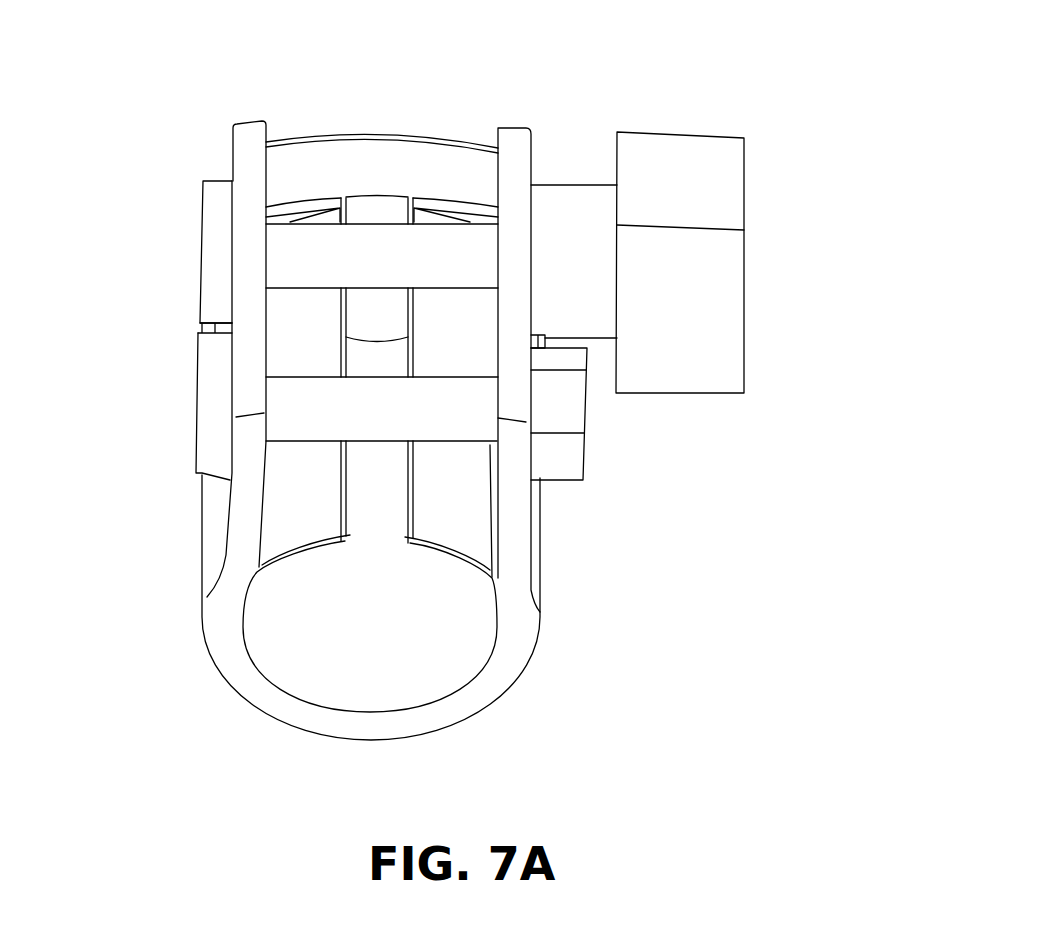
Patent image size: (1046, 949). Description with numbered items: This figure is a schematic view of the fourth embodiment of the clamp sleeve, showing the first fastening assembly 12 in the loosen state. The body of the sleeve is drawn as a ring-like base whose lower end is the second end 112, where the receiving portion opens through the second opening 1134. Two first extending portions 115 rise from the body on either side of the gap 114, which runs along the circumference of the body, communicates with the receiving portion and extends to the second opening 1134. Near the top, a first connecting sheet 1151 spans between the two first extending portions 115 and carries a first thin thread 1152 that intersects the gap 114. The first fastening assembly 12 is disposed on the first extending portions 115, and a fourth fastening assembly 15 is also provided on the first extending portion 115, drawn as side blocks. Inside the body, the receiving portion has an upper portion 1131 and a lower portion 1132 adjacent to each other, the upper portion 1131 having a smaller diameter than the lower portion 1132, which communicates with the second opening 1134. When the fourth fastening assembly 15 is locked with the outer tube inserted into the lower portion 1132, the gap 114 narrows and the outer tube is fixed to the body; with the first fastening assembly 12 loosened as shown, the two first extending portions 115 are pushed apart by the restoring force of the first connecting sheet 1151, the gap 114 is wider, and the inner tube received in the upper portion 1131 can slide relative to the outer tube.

The second end 112 is at (440, 731).
The gap 114 is at (385, 499).
The first extending portion 115 is at (252, 204).
The upper portion 1131 is at (372, 362).
The lower portion 1132 is at (385, 612).
The second opening 1134 is at (478, 677).
The first connecting sheet 1151 is at (313, 165).
The first thin thread 1152 is at (448, 205).
The first fastening assembly 12 is at (300, 263).
The fourth fastening assembly 15 is at (305, 425).